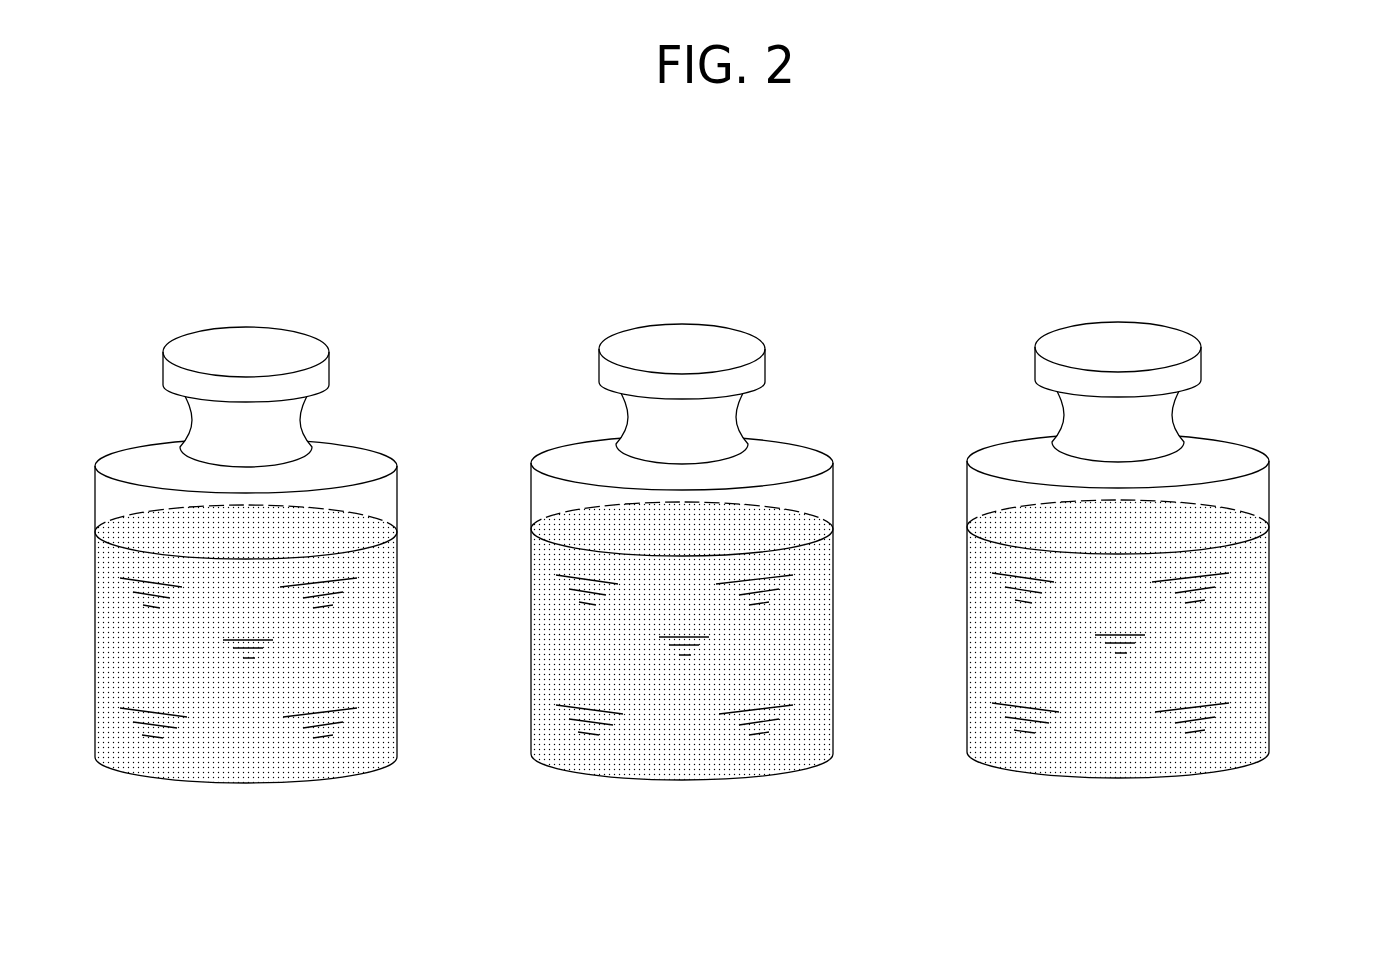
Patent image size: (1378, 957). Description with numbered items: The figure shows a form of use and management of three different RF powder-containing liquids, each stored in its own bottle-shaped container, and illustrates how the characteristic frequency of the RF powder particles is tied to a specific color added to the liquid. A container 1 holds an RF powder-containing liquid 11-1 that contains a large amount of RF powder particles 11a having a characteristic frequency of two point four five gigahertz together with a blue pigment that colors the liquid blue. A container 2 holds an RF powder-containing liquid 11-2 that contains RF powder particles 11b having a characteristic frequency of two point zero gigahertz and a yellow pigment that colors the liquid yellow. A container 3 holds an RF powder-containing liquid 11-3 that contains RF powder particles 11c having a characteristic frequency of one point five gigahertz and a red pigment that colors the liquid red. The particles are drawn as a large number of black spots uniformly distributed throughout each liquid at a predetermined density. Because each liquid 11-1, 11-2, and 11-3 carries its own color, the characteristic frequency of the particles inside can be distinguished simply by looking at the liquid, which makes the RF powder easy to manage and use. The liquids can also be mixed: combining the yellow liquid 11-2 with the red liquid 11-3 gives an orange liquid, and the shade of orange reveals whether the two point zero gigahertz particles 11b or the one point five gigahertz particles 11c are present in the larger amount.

The container 1 is at (294, 593).
The container 2 is at (729, 590).
The container 3 is at (1164, 589).
The RF powder-containing liquid 11-1 is at (104, 603).
The RF powder-containing liquid 11-2 is at (742, 655).
The RF powder-containing liquid 11-3 is at (1177, 653).
The RF powder particles 11a is at (246, 682).
The RF powder particles 11b is at (682, 679).
The RF powder particles 11c is at (1118, 678).